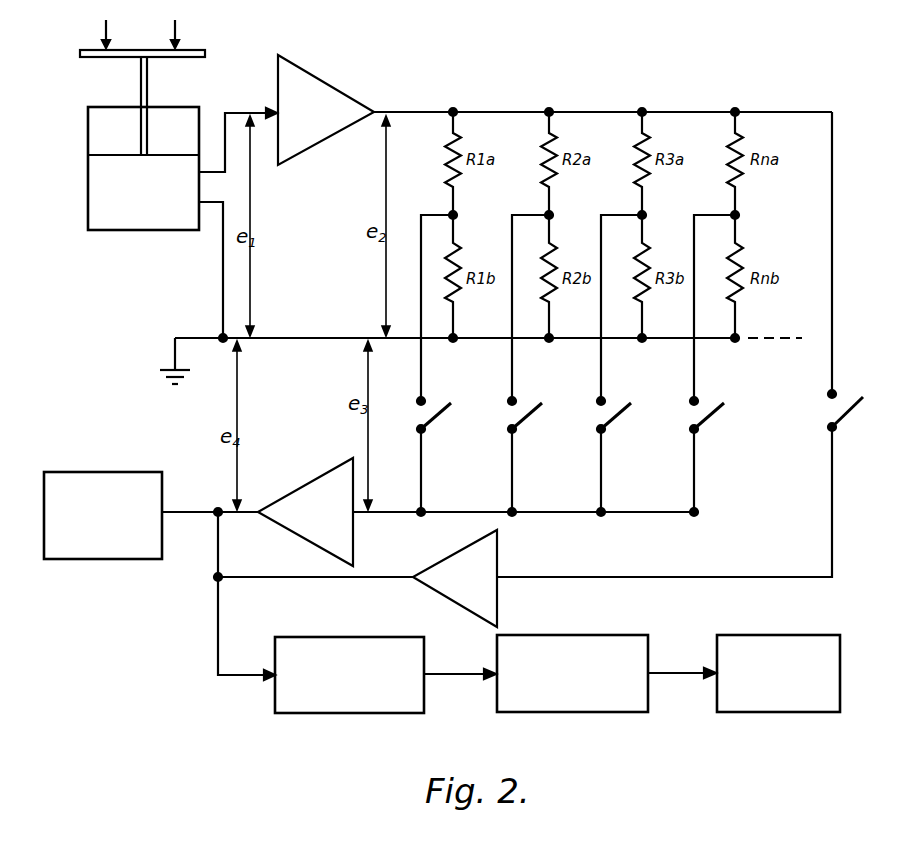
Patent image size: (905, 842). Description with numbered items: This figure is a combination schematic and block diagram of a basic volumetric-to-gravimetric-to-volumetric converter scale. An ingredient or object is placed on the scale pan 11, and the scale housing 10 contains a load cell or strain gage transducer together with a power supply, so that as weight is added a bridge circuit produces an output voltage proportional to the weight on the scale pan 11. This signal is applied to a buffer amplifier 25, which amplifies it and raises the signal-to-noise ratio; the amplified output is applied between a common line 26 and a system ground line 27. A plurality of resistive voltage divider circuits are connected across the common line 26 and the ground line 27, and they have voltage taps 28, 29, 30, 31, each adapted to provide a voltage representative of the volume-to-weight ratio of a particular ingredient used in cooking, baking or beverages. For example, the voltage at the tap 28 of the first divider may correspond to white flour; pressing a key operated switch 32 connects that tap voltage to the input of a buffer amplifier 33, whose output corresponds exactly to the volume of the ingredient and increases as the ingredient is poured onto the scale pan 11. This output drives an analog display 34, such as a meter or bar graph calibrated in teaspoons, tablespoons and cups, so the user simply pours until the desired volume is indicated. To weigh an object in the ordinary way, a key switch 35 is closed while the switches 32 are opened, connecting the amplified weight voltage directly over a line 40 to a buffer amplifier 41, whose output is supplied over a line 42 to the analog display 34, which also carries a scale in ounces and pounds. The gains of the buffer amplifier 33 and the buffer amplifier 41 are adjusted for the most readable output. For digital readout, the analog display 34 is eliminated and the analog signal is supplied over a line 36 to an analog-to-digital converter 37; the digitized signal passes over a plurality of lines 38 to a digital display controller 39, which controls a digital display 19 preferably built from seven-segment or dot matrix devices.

The scale housing 10 is at (88, 125).
The scale pan 11 is at (80, 52).
The digital display 19 is at (778, 703).
The buffer amplifier 25 is at (313, 78).
The common line 26 is at (686, 110).
The system ground line 27 is at (318, 336).
The voltage tap 28 is at (457, 215).
The voltage tap 29 is at (565, 208).
The voltage tap 30 is at (646, 215).
The voltage tap 31 is at (739, 215).
The key operated switch 32 is at (436, 400).
The buffer amplifier 33 is at (337, 470).
The analog display 34 is at (110, 461).
The key switch 35 is at (830, 415).
The line 36 is at (215, 603).
The analog-to-digital converter 37 is at (355, 703).
The lines 38 is at (460, 674).
The digital display controller 39 is at (585, 703).
The line 40 is at (614, 577).
The buffer amplifier 41 is at (492, 548).
The line 42 is at (310, 580).